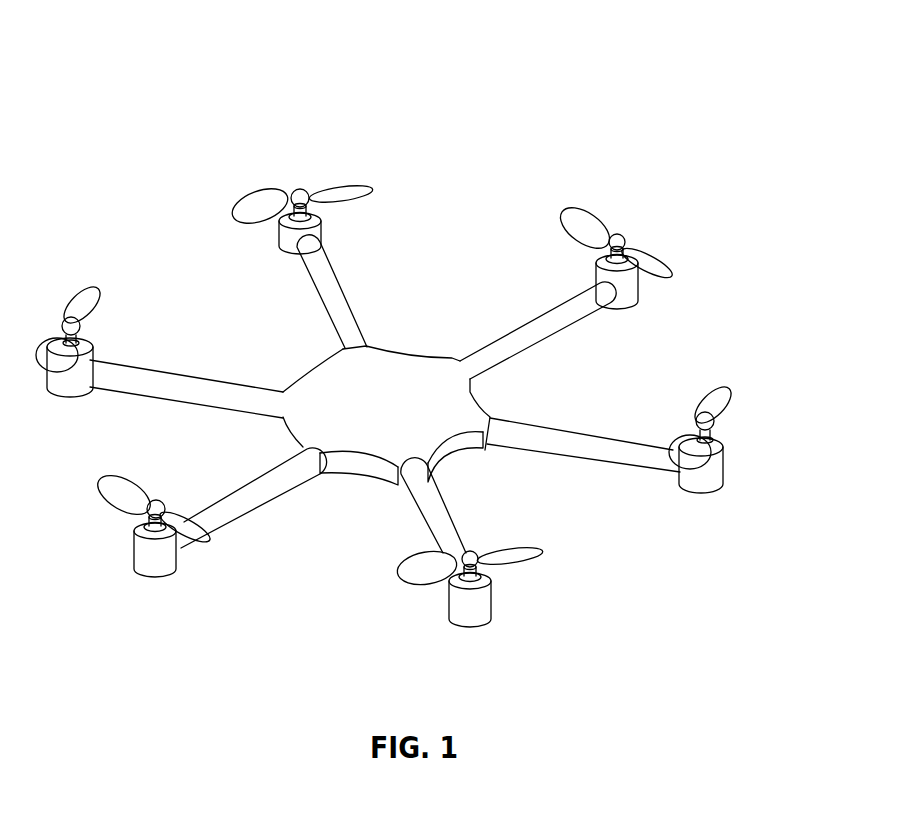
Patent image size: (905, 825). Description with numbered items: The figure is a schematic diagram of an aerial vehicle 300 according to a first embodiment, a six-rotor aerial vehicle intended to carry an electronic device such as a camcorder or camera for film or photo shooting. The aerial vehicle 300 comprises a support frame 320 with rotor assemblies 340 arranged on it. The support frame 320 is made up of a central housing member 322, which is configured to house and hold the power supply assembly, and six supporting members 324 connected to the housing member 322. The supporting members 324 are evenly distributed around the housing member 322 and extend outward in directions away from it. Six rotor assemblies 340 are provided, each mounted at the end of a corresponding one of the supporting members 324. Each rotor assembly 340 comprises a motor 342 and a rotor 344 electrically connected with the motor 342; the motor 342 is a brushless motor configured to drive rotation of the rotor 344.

The aerial vehicle 300 is at (204, 56).
The support frame 320 is at (550, 246).
The housing member 322 is at (433, 387).
The supporting member 324 is at (535, 332).
The rotor assembly 340 is at (745, 171).
The motor 342 is at (625, 297).
The rotor 344 is at (590, 225).